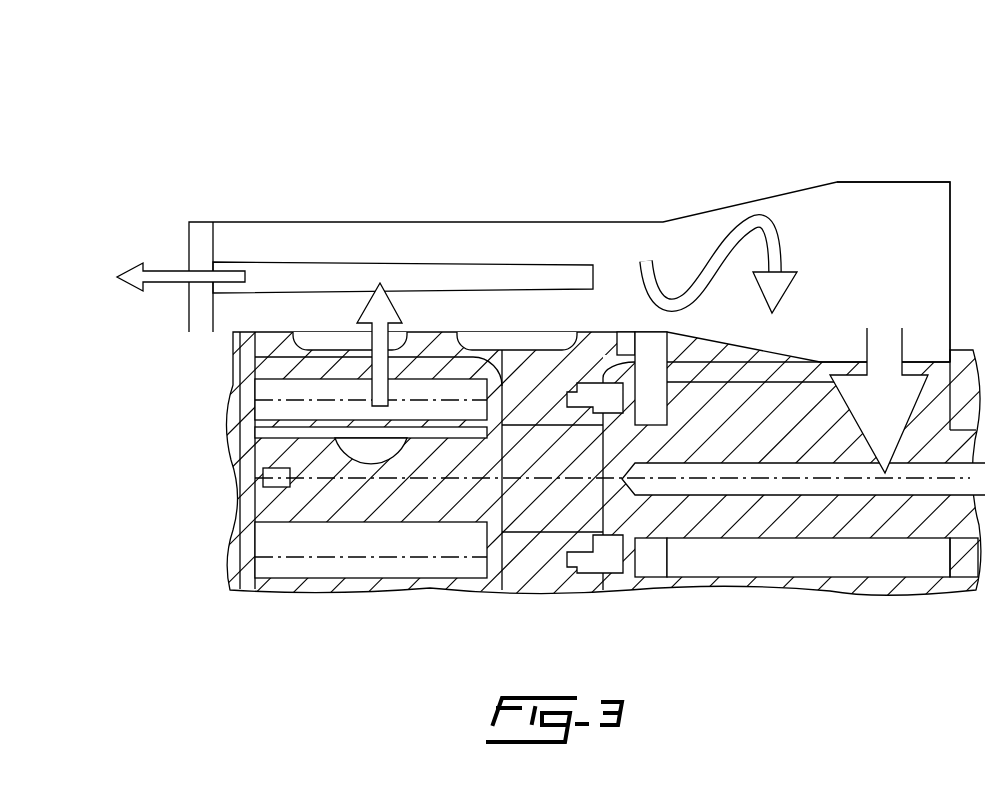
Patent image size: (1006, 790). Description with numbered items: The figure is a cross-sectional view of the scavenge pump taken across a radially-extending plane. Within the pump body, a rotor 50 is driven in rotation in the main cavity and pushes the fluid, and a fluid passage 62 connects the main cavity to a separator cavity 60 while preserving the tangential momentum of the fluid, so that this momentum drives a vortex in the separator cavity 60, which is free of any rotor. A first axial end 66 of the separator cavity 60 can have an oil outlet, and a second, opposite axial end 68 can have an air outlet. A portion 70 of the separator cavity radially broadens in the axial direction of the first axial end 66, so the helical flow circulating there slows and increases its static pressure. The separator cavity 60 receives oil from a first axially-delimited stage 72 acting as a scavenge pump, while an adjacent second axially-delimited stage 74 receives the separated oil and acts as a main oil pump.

The rotor 50 is at (273, 458).
The separator cavity 60 is at (340, 222).
The fluid passage 62 is at (382, 367).
The first axial end 66 is at (877, 182).
The second axial end 68 is at (188, 238).
The portion of the separator cavity 70 is at (763, 197).
The first axially-delimited stage 72 is at (515, 90).
The second axially-delimited stage 74 is at (902, 90).